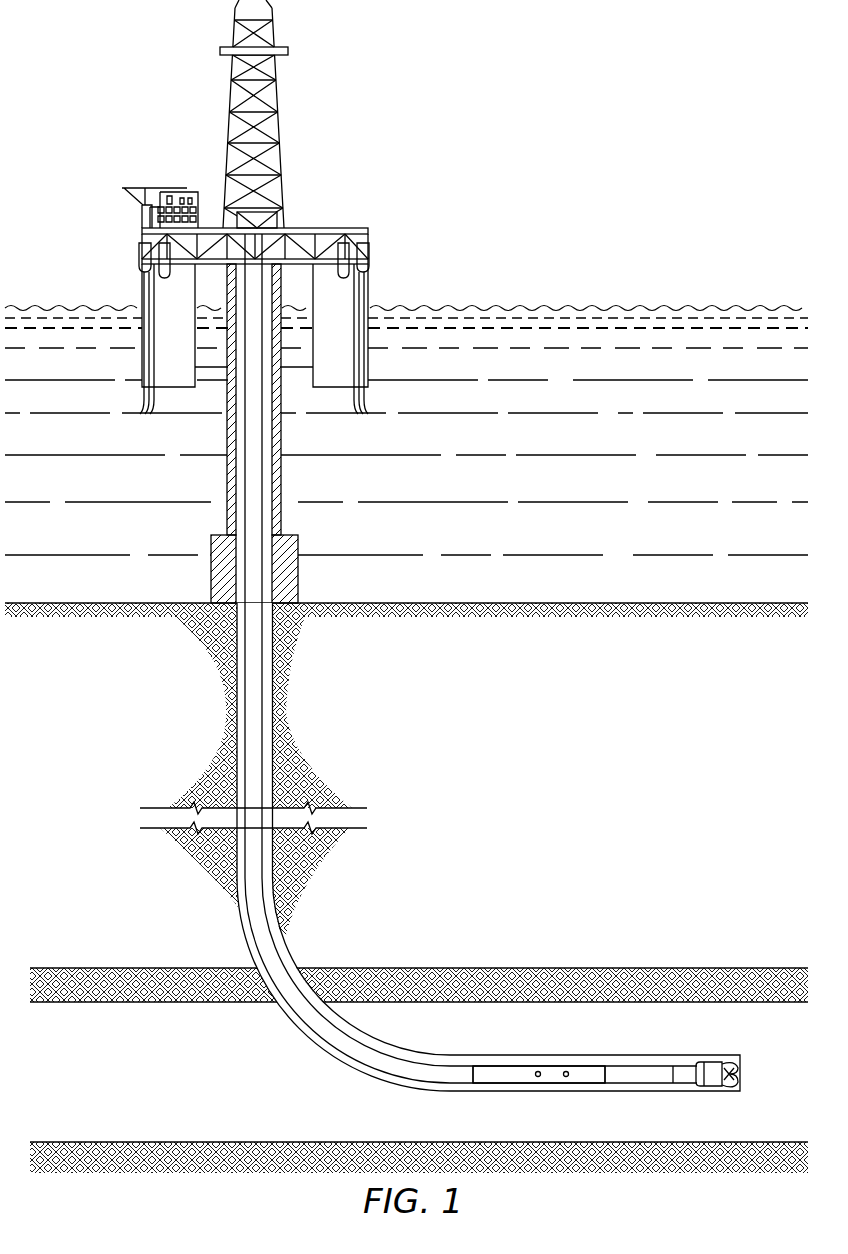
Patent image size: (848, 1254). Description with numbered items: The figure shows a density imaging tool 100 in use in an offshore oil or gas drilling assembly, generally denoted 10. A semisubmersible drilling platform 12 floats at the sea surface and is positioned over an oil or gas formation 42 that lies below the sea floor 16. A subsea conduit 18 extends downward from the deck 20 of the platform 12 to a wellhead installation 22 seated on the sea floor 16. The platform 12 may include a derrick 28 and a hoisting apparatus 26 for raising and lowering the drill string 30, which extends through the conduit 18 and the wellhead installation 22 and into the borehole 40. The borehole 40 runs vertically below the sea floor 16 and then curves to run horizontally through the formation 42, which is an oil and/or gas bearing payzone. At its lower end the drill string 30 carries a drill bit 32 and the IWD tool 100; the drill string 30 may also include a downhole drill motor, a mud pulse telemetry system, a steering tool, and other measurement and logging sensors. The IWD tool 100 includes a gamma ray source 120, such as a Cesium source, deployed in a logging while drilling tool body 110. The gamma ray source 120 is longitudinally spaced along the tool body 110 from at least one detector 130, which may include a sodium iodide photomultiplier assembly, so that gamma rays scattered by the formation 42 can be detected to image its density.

The offshore oil or gas drilling assembly 10 is at (406, 586).
The semisubmersible drilling platform 12 is at (355, 229).
The sea floor 16 is at (510, 603).
The subsea conduit 18 is at (282, 479).
The deck 20 is at (369, 260).
The wellhead installation 22 is at (291, 536).
The drawworks / hoisting equipment 26 is at (258, 212).
The derrick 28 is at (276, 36).
The drill string 30 is at (259, 401).
The drill bit 32 is at (730, 1060).
The borehole 40 is at (235, 718).
The oil or gas formation 42 is at (162, 1084).
The density imaging tool 100 is at (608, 1071).
The logging while drilling tool body 110 is at (512, 1066).
The gamma ray source 120 is at (538, 1077).
The detector 130 is at (567, 1072).